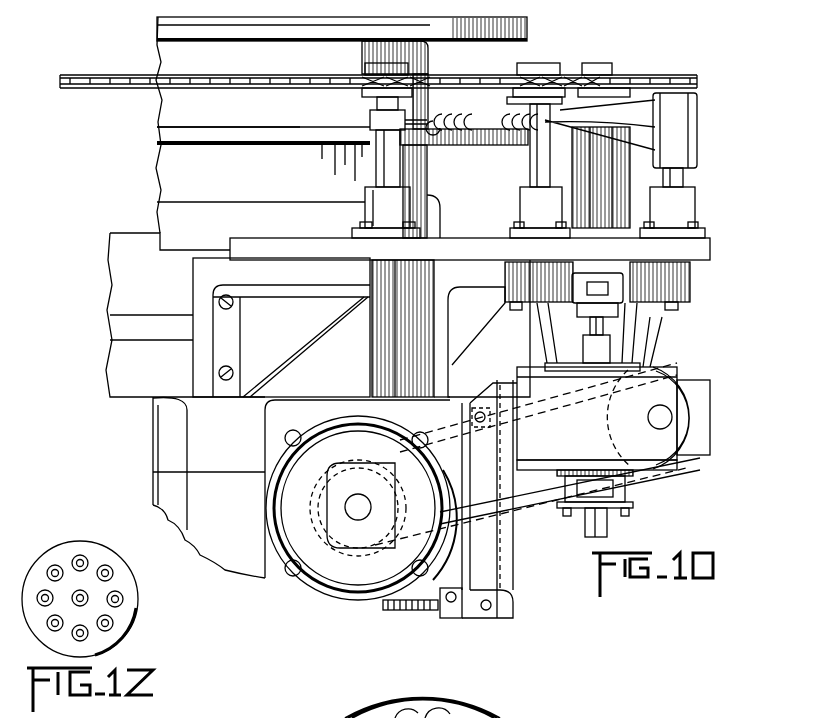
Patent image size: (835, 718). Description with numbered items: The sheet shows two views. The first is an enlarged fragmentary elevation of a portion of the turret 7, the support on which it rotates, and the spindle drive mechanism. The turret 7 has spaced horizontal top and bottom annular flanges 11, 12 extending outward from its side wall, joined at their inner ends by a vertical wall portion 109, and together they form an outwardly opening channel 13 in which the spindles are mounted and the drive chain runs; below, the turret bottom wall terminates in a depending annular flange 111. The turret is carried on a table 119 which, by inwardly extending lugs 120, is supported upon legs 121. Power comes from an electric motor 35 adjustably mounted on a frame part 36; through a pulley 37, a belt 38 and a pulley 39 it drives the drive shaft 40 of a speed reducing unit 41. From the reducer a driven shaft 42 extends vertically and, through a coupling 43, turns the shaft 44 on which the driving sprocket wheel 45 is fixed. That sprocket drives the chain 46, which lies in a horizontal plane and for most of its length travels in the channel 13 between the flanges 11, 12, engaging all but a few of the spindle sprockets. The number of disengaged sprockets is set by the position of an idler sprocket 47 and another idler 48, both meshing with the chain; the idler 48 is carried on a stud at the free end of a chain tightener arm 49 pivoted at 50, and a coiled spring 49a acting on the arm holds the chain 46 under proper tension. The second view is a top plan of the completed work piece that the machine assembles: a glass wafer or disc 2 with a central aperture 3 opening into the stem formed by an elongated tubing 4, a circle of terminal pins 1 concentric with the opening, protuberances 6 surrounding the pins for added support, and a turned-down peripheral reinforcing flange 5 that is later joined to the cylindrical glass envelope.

In FIG. 10, the turret 7 is at (158, 173).
In FIG. 10, the top annular flange 11 is at (528, 33).
In FIG. 10, the bottom annular flange 12 is at (312, 150).
In FIG. 10, the channel 13 is at (268, 120).
In FIG. 10, the electric motor 35 is at (368, 603).
In FIG. 10, the frame part 36 is at (510, 605).
In FIG. 10, the pulley 37 is at (400, 517).
In FIG. 10, the belt 38 is at (533, 512).
In FIG. 10, the pulley 39 is at (600, 414).
In FIG. 10, the drive shaft 40 is at (650, 424).
In FIG. 10, the speed reducing unit 41 is at (655, 380).
In FIG. 10, the driven shaft 42 is at (604, 325).
In FIG. 10, the coupling 43 is at (612, 288).
In FIG. 10, the shaft 44 is at (592, 106).
In FIG. 10, the driving sprocket wheel 45 is at (628, 68).
In FIG. 10, the chain 46 is at (266, 75).
In FIG. 10, the idler sprocket 47 is at (352, 70).
In FIG. 10, the idler sprocket 48 is at (500, 75).
In FIG. 10, the arm 49 is at (684, 140).
In FIG. 10, the coiled spring 49a is at (490, 130).
In FIG. 10, the pivot 50 is at (685, 182).
In FIG. 10, the vertical wall portion 109 is at (428, 62).
In FIG. 10, the depending annular flange 111 is at (158, 217).
In FIG. 10, the table 119 is at (112, 278).
In FIG. 10, the lugs 120 is at (162, 432).
In FIG. 10, the legs 121 is at (162, 478).
In FIG. 12, the terminal pins 1 is at (123, 599).
In FIG. 12, the glass wafer or disc 2 is at (118, 585).
In FIG. 12, the central aperture 3 is at (80, 598).
In FIG. 12, the tubing 4 is at (88, 563).
In FIG. 12, the reinforcing flange 5 is at (136, 625).
In FIG. 12, the protuberances 6 is at (55, 565).